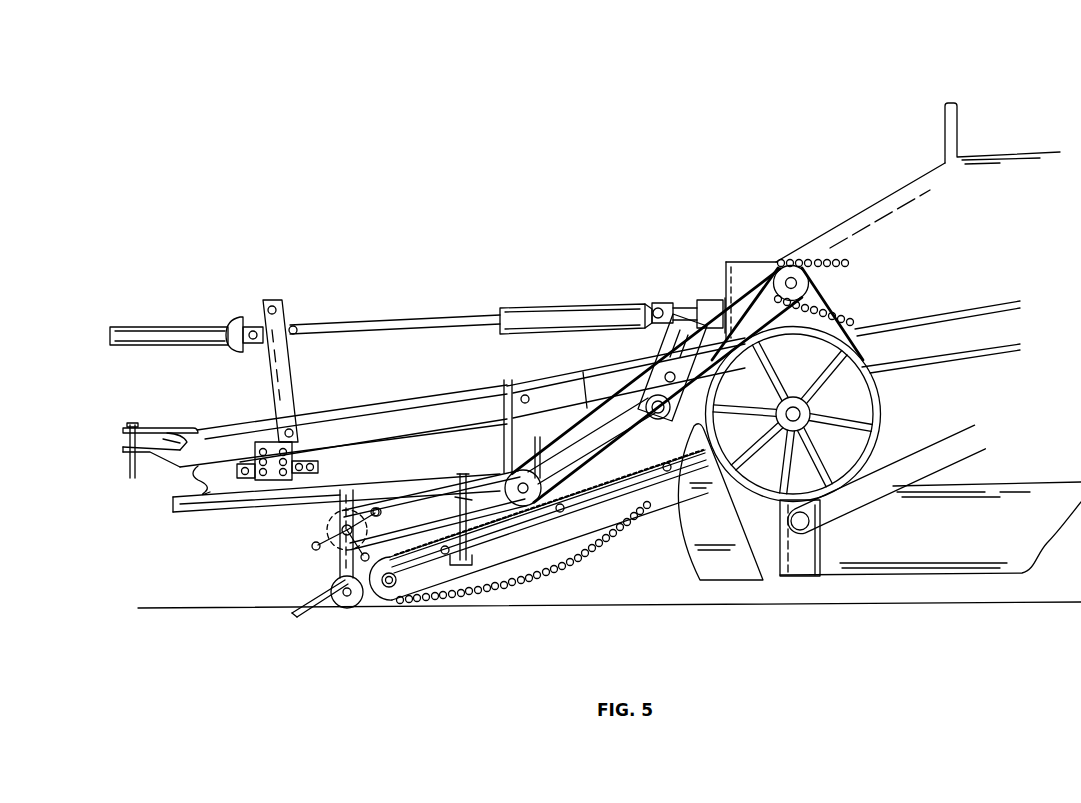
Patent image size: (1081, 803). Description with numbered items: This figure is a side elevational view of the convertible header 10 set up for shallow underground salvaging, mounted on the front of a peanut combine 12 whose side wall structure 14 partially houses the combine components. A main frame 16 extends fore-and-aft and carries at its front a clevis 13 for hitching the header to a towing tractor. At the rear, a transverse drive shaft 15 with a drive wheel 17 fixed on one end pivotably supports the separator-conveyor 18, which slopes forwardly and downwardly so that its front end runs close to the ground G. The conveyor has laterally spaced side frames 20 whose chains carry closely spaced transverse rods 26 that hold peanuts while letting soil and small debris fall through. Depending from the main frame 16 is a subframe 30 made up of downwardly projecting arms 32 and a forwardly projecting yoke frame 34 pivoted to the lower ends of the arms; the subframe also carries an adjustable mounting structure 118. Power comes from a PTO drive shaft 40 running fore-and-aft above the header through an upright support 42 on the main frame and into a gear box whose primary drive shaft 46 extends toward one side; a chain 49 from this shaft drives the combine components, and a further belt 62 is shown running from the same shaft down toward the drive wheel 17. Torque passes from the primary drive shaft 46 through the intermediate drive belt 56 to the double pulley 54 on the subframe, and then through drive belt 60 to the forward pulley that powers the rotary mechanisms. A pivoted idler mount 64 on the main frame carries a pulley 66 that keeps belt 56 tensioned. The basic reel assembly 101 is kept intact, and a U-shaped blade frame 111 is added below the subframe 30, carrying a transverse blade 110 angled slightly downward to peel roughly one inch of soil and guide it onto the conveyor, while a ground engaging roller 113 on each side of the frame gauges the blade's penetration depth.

The convertible header 10 is at (388, 262).
The peanut combine 12 is at (872, 138).
The front clevis 13 is at (177, 430).
The side wall structure 14 is at (970, 221).
The drive shaft 15 is at (798, 412).
The main frame 16 is at (462, 402).
The drive wheel 17 is at (877, 428).
The separator-conveyor 18 is at (610, 567).
The side frames 20 is at (538, 525).
The rods 26 is at (548, 575).
The subframe 30 is at (150, 498).
The downwardly projecting arms 32 is at (522, 429).
The yoke frame 34 is at (177, 500).
The PTO drive shaft 40 is at (403, 323).
The support 42 is at (288, 378).
The primary drive shaft 46 is at (797, 284).
The chain 49 is at (845, 262).
The double pulley 54 is at (535, 474).
The intermediate drive belt 56 is at (600, 451).
The drive belt 60 is at (432, 490).
The wheel drive belt 62 is at (826, 308).
The idler mount 64 is at (667, 335).
The pulley 66 is at (650, 417).
The basic reel assembly 101 is at (320, 520).
The transverse blade 110 is at (330, 592).
The U-shaped blade frame 111 is at (338, 560).
The ground engaging roller 113 is at (345, 597).
The adjustable mounting structure 118 is at (318, 468).
The ground G is at (207, 608).